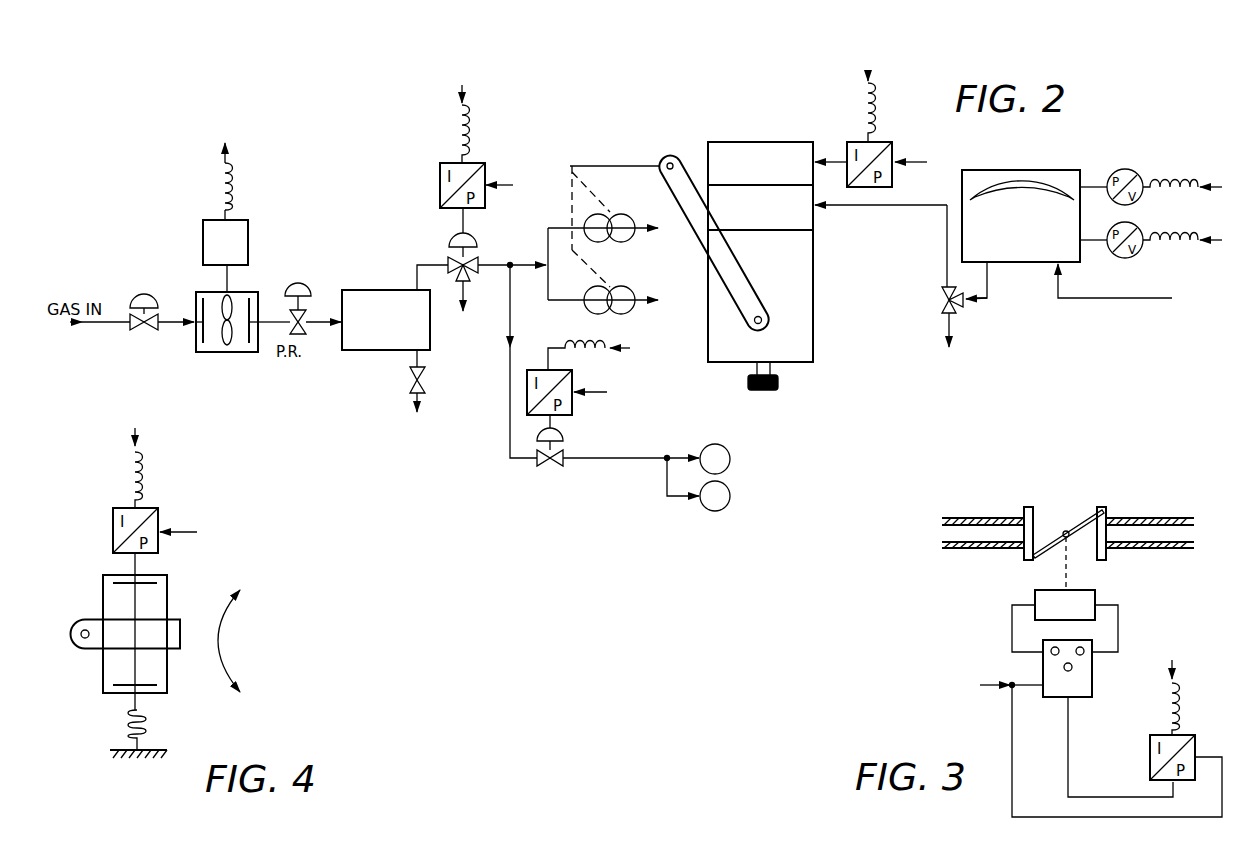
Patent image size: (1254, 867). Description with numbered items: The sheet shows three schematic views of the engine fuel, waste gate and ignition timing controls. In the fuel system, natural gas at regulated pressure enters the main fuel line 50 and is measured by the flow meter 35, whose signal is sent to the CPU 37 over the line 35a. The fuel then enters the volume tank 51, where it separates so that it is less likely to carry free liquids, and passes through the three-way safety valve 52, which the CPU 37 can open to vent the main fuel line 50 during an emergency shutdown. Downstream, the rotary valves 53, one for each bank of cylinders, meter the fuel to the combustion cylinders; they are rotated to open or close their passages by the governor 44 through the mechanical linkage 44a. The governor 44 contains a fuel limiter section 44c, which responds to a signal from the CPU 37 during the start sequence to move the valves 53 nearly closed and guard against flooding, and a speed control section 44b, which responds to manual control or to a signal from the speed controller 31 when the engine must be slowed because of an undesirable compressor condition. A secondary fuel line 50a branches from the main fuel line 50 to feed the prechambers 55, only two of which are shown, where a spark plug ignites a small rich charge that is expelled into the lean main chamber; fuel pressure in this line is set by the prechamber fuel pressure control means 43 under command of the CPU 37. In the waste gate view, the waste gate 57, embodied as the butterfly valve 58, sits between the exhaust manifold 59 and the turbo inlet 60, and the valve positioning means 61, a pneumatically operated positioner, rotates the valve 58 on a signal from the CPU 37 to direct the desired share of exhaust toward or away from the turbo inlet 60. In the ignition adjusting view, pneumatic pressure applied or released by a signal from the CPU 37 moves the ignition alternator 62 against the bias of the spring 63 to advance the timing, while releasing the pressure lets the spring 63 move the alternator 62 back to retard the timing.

In FIG. 2, the speed controller 31 is at (1007, 170).
In FIG. 2, the flow meter 35 is at (253, 292).
In FIG. 2, the line 35a is at (228, 198).
In FIG. 2, the CPU 37 is at (563, 211).
In FIG. 3, the CPU 37 is at (1186, 688).
In FIG. 4, the CPU 37 is at (149, 455).
In FIG. 2, the prechamber fuel pressure control means 43 is at (565, 437).
In FIG. 2, the governor 44 is at (803, 285).
In FIG. 2, the mechanical linkage 44a is at (638, 163).
In FIG. 2, the speed control section 44b is at (817, 223).
In FIG. 2, the fuel limiter section 44c is at (750, 140).
In FIG. 2, the main fuel line 50 is at (170, 319).
In FIG. 2, the secondary fuel line 50a is at (141, 330).
In FIG. 2, the volume tank 51 is at (375, 332).
In FIG. 2, the 3-way safety valve 52 is at (452, 238).
In FIG. 2, the rotary valves 53 is at (617, 215).
In FIG. 2, the prechambers 55 is at (730, 461).
In FIG. 3, the waste gate 57 is at (1050, 500).
In FIG. 3, the butterfly valve 58 is at (1076, 517).
In FIG. 3, the exhaust manifold 59 is at (975, 517).
In FIG. 3, the turbo inlet 60 is at (1137, 519).
In FIG. 3, the valve positioning means 61 is at (1030, 633).
In FIG. 4, the ignition alternator 62 is at (133, 611).
In FIG. 4, the spring 63 is at (152, 719).